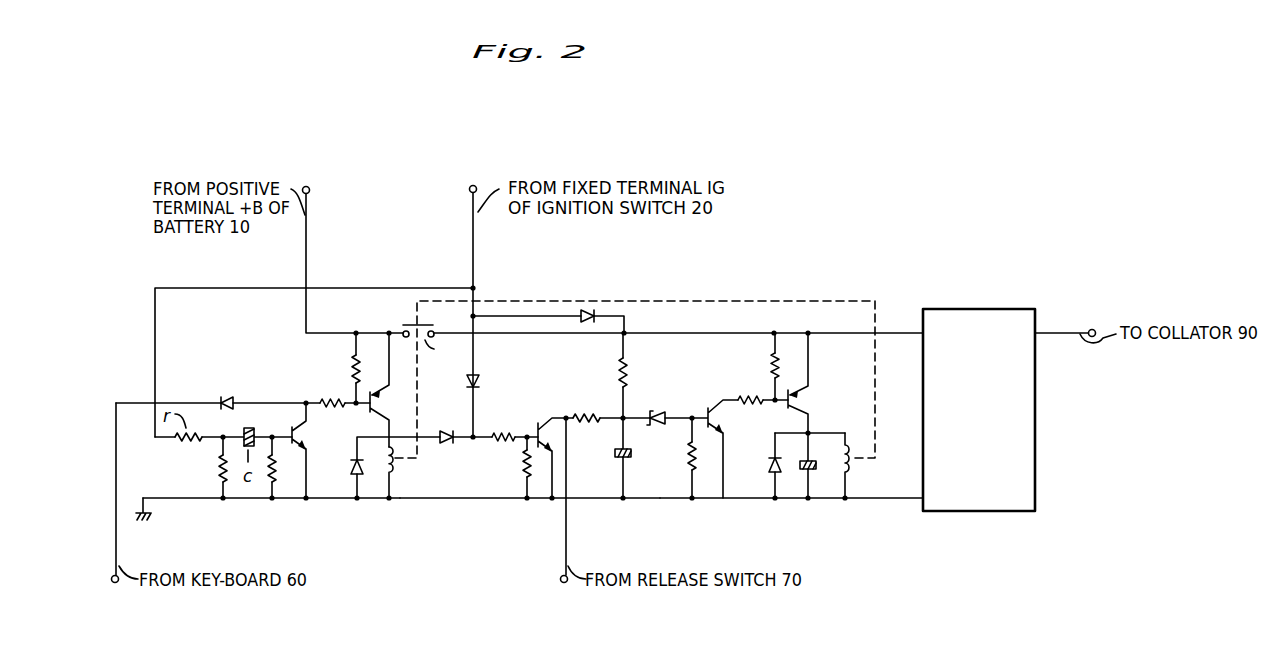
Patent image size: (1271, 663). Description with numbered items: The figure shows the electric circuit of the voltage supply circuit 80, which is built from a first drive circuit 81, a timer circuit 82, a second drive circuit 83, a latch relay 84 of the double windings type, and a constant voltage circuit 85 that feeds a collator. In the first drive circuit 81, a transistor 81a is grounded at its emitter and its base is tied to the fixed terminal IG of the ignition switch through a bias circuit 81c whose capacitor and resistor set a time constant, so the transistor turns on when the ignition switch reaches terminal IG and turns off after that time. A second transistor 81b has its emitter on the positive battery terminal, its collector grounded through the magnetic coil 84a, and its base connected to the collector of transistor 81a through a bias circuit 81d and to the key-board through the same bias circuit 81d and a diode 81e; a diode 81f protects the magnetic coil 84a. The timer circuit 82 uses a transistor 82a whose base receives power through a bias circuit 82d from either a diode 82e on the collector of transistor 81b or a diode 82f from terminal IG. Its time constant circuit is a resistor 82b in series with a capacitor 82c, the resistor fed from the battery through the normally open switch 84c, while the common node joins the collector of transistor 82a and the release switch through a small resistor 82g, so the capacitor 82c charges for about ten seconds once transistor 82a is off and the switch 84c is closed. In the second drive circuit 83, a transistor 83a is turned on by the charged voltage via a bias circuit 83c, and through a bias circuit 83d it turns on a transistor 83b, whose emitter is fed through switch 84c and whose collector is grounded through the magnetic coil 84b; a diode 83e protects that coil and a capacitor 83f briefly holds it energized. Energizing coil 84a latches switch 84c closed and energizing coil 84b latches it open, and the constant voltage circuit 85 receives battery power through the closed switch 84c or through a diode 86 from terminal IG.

The voltage supply circuit 80 is at (832, 216).
The first drive circuit 81 is at (312, 508).
The transistor 81a is at (303, 438).
The transistor 81b is at (377, 421).
The bias circuit 81c is at (210, 465).
The bias circuit 81d is at (348, 395).
The diode 81e is at (229, 397).
The diode 81f is at (354, 472).
The timer circuit 82 is at (593, 510).
The transistor 82a is at (546, 420).
The resistor 82b is at (612, 373).
The capacitor 82c is at (615, 462).
The bias circuit 82d is at (516, 452).
The diode 82e is at (447, 445).
The diode 82f is at (480, 381).
The resistor 82g is at (586, 428).
The second drive circuit 83 is at (752, 510).
The transistor 83a is at (708, 407).
The transistor 83b is at (797, 394).
The bias circuit 83c is at (675, 427).
The bias circuit 83d is at (767, 391).
The diode 83e is at (768, 462).
The capacitor 83f is at (800, 474).
The latch relay 84 is at (402, 320).
The magnetic coil 84a is at (400, 465).
The magnetic coil 84b is at (854, 466).
The normally open switch 84c is at (427, 344).
The constant voltage circuit 85 is at (993, 512).
The diode 86 is at (588, 311).